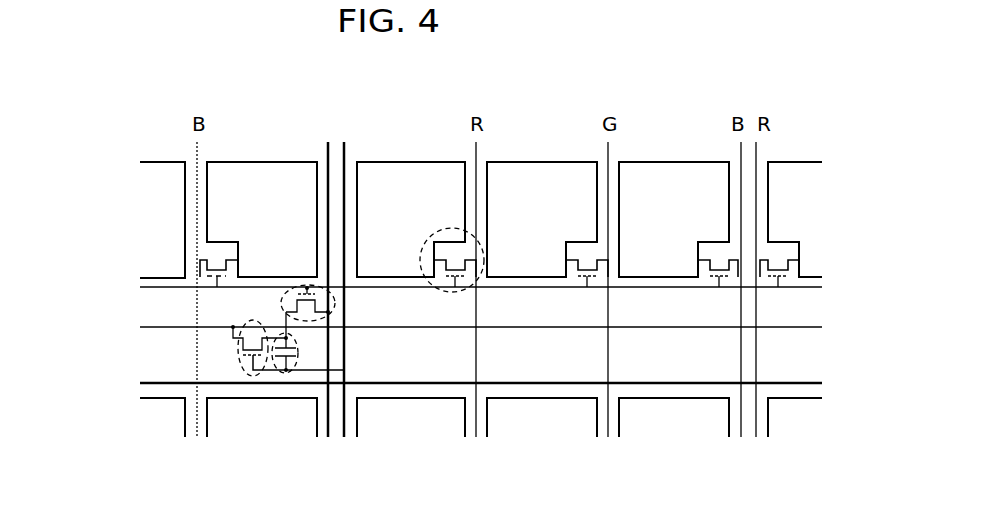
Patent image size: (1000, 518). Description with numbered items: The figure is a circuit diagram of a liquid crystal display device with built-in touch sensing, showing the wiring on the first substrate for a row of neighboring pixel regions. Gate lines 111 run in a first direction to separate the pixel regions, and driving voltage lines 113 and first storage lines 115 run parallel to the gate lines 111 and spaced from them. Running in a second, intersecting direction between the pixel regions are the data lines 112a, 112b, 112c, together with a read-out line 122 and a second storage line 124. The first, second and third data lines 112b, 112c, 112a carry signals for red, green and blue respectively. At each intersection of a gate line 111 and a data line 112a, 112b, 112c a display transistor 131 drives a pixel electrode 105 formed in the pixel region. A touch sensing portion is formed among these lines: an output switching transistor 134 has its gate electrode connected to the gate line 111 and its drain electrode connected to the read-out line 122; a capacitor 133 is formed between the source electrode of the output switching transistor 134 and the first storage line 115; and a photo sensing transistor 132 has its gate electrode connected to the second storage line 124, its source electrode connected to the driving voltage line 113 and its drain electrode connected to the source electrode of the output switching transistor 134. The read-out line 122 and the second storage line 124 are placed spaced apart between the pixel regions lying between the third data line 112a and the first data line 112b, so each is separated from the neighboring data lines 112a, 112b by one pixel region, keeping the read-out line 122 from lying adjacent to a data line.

The pixel electrode 105 is at (229, 162).
The gate line 111 is at (152, 280).
The driving voltage line 113 is at (147, 327).
The first storage line 115 is at (150, 386).
The third data line 112a is at (197, 437).
The first data line 112b is at (476, 437).
The second data line 112c is at (608, 437).
The read-out line 122 is at (328, 150).
The second storage line 124 is at (344, 143).
The display transistor 131 is at (455, 228).
The photo sensing transistor 132 is at (240, 350).
The capacitor 133 is at (298, 350).
The output switching transistor 134 is at (335, 305).